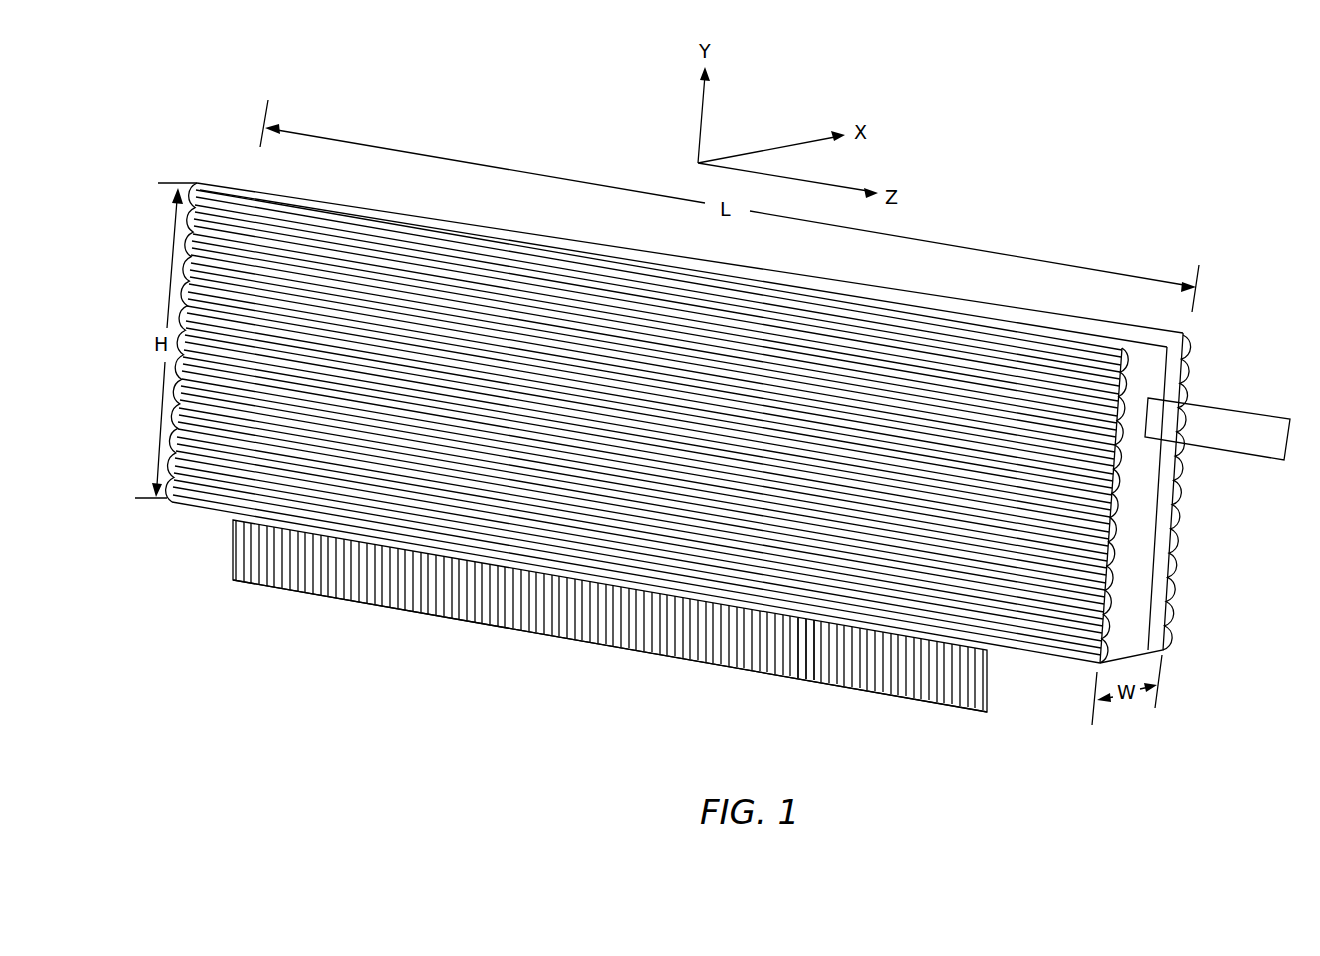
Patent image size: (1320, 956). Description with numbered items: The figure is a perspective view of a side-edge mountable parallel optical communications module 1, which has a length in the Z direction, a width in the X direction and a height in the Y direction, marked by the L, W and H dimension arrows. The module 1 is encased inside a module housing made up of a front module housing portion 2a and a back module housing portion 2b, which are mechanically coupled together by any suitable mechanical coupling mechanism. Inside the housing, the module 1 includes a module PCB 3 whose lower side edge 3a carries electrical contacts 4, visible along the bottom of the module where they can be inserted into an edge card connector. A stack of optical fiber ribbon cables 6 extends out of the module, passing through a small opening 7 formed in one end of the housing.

The side-edge mountable parallel optical communications module 1 is at (1127, 117).
The front module housing portion 2a is at (262, 188).
The back module housing portion 2b is at (390, 197).
The module PCB 3 is at (231, 547).
The lower side edge 3a is at (663, 657).
The electrical contacts 4 is at (810, 668).
The stack of optical fiber ribbon cables 6 is at (1222, 437).
The small opening 7 is at (1150, 400).